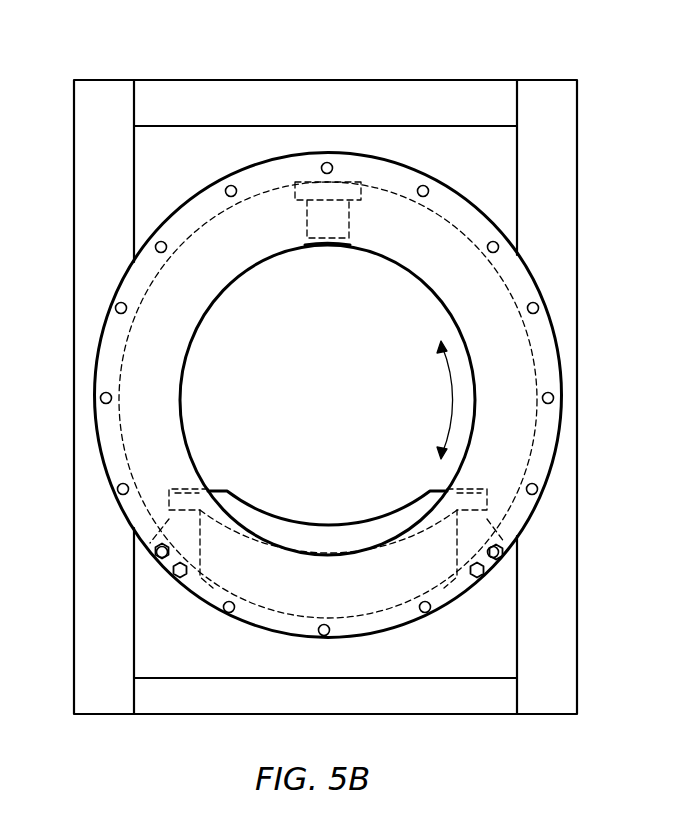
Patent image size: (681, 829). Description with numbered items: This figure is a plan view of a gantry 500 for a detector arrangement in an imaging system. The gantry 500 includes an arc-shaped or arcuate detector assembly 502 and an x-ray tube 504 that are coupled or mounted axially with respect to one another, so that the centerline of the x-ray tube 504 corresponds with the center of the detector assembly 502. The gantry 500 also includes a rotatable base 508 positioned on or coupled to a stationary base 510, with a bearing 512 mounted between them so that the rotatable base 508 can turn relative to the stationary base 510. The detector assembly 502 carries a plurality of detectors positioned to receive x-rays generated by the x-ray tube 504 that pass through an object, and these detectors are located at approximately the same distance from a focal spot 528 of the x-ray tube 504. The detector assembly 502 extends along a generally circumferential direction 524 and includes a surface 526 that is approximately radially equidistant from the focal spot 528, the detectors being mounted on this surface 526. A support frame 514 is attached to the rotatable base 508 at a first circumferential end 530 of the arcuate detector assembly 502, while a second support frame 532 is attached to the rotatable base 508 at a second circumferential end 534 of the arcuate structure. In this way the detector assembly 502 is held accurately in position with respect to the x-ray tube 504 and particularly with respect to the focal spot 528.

The gantry 500 is at (446, 256).
The detector assembly 502 is at (238, 495).
The x-ray tube 504 is at (305, 218).
The rotatable base 508 is at (245, 167).
The stationary base 510 is at (579, 111).
The bearing 512 is at (106, 537).
The support frame 514 is at (185, 548).
The circumferential direction 524 is at (453, 398).
The surface 526 is at (373, 517).
The focal spot 528 is at (328, 250).
The first circumferential end 530 is at (196, 446).
The second support frame 532 is at (470, 547).
The second circumferential end 534 is at (485, 472).